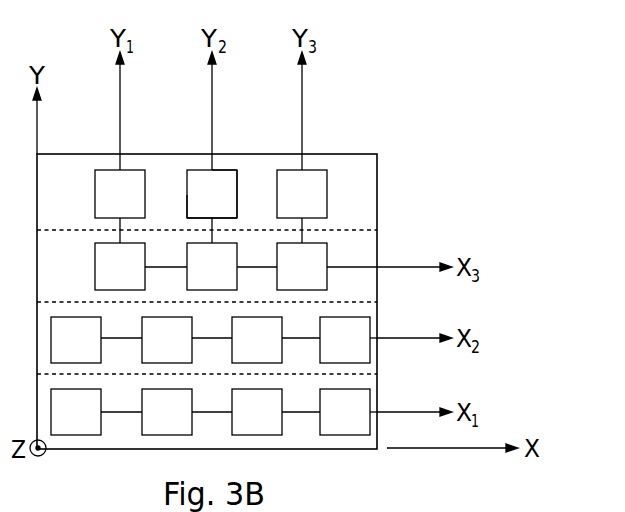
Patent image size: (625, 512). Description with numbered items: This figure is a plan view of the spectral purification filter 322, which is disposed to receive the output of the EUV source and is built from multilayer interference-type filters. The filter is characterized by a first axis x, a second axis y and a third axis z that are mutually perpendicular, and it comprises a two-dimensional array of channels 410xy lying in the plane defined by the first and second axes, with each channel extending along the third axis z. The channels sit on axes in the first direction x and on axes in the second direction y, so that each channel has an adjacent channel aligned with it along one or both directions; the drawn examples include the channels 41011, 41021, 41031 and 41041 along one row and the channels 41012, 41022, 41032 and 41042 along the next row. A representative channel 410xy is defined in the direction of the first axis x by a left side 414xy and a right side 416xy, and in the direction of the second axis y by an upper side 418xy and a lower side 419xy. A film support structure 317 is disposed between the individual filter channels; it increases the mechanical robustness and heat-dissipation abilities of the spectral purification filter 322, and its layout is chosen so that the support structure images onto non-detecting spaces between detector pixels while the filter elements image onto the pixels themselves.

The spectral purification filter 322 is at (398, 114).
The film support structure 317 is at (362, 180).
The channel 410xy is at (212, 194).
The left side 414xy is at (186, 203).
The right side 416xy is at (240, 188).
The upper side 418xy is at (231, 170).
The lower side 419xy is at (220, 218).
The channel 41011 is at (76, 412).
The channel 41012 is at (76, 340).
The channel 41021 is at (167, 412).
The channel 41022 is at (167, 340).
The channel 41031 is at (257, 412).
The channel 41032 is at (257, 340).
The channel 41041 is at (345, 412).
The channel 41042 is at (345, 340).